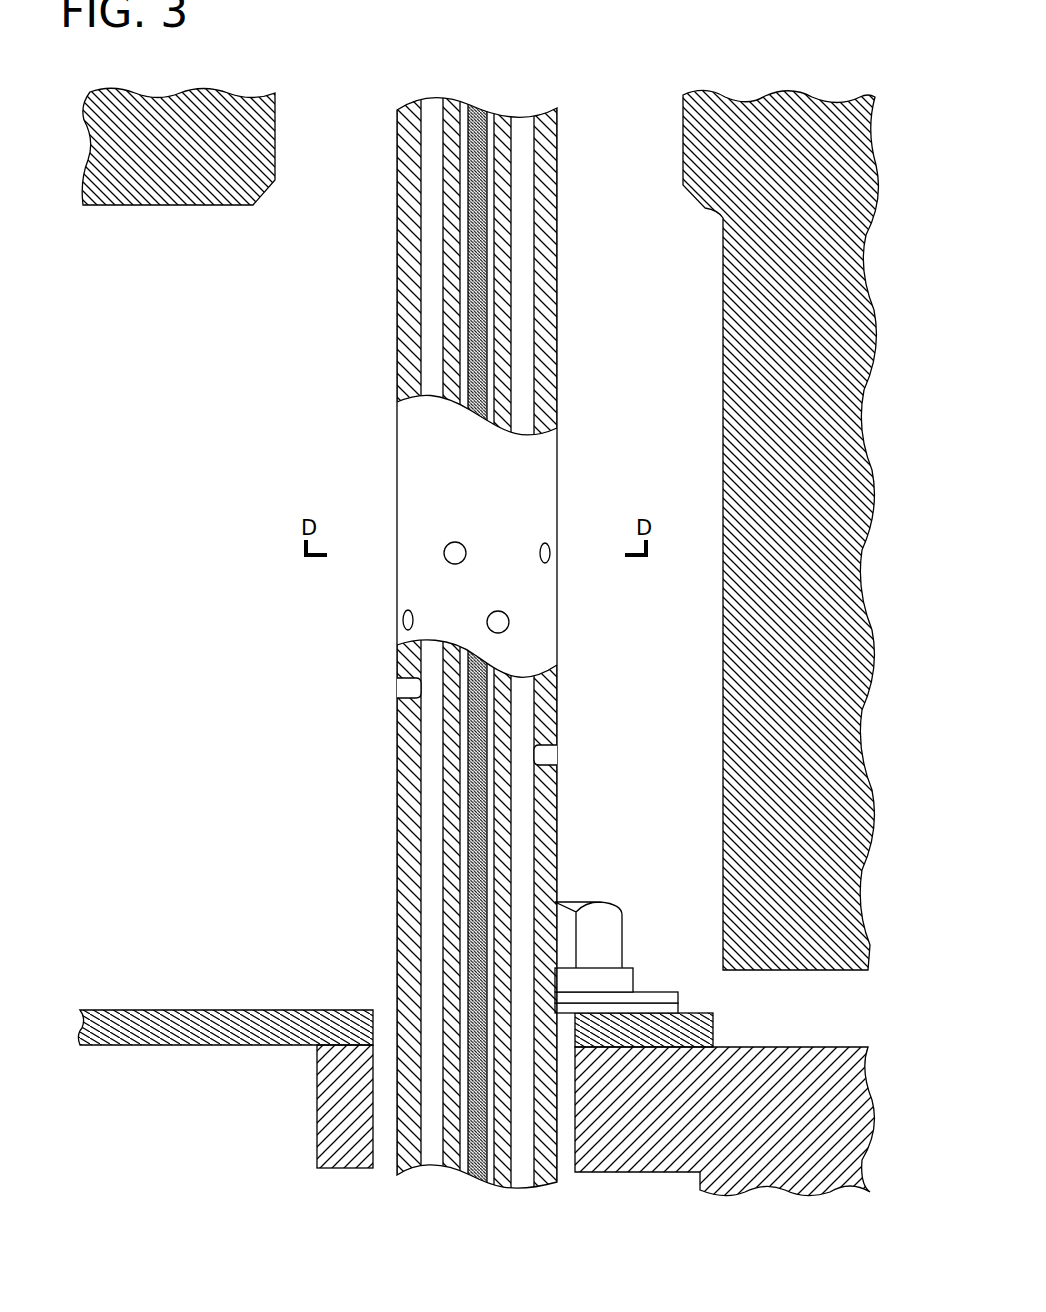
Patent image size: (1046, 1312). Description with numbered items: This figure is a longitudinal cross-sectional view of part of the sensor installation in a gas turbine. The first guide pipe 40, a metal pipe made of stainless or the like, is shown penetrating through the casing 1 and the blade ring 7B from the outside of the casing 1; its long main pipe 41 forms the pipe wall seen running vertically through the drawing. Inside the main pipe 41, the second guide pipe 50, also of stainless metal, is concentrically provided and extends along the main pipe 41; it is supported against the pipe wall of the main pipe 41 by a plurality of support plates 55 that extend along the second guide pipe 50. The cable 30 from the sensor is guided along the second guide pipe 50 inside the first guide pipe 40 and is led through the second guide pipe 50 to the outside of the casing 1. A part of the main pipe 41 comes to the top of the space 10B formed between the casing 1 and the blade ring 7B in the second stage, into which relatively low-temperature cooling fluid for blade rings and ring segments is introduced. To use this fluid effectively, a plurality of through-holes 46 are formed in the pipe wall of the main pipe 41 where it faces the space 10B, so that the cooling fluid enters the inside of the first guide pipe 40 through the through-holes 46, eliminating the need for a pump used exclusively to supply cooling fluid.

The casing 1 is at (231, 206).
The space 10B is at (693, 325).
The blade ring 7B is at (318, 1152).
The cable 30 is at (485, 775).
The first guide pipe 40 is at (557, 220).
The main pipe 41 is at (553, 262).
The through-holes 46 is at (444, 556).
The second guide pipe 50 is at (445, 277).
The support plates 55 is at (430, 318).